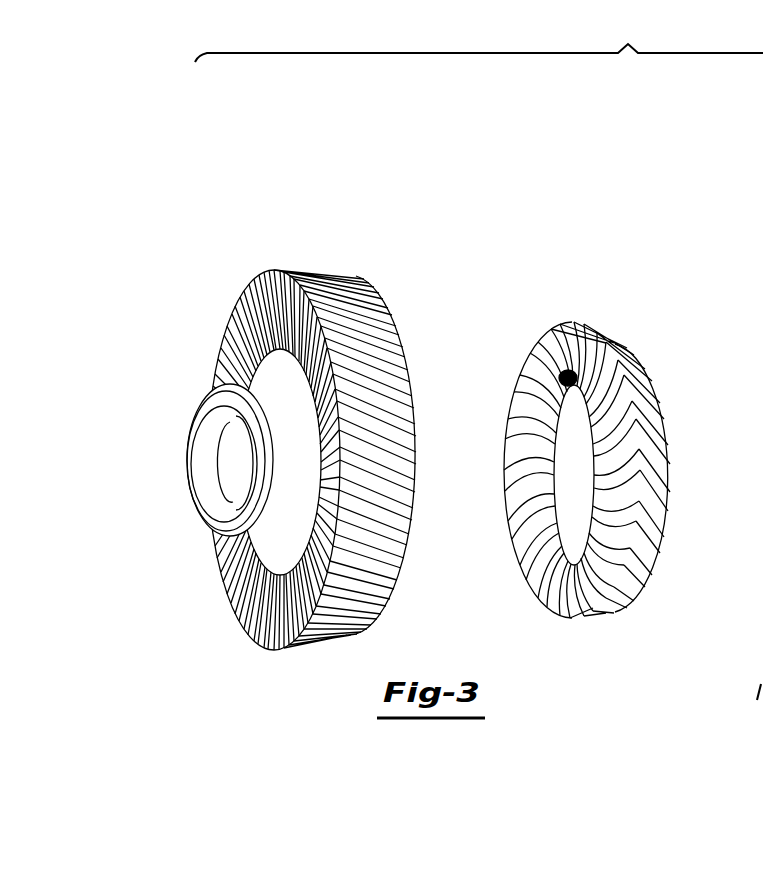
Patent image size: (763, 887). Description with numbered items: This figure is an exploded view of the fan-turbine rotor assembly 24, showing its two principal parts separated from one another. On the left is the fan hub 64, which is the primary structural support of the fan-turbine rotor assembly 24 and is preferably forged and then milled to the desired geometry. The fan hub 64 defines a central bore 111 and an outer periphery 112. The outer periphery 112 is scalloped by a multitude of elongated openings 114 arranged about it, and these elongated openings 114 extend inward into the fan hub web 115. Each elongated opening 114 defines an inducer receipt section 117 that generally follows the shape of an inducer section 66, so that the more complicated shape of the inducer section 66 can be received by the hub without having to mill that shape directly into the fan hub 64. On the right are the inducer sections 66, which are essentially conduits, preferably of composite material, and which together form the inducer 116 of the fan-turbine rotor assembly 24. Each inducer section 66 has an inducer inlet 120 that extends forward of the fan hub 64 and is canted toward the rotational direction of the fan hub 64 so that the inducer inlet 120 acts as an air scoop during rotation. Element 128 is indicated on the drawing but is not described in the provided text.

The fan-turbine rotor assembly 24 is at (479, 36).
The fan hub 64 is at (286, 408).
The outer periphery 112 is at (337, 277).
The elongated openings 114 is at (396, 552).
The inducer receipt section 117 is at (222, 343).
The bore 111 is at (200, 457).
The fan hub web 115 is at (245, 563).
The inducer 116 is at (616, 416).
The inducer inlet 120 is at (603, 440).
The pinion teeth 128 is at (655, 517).
The inducer section 66 is at (647, 572).